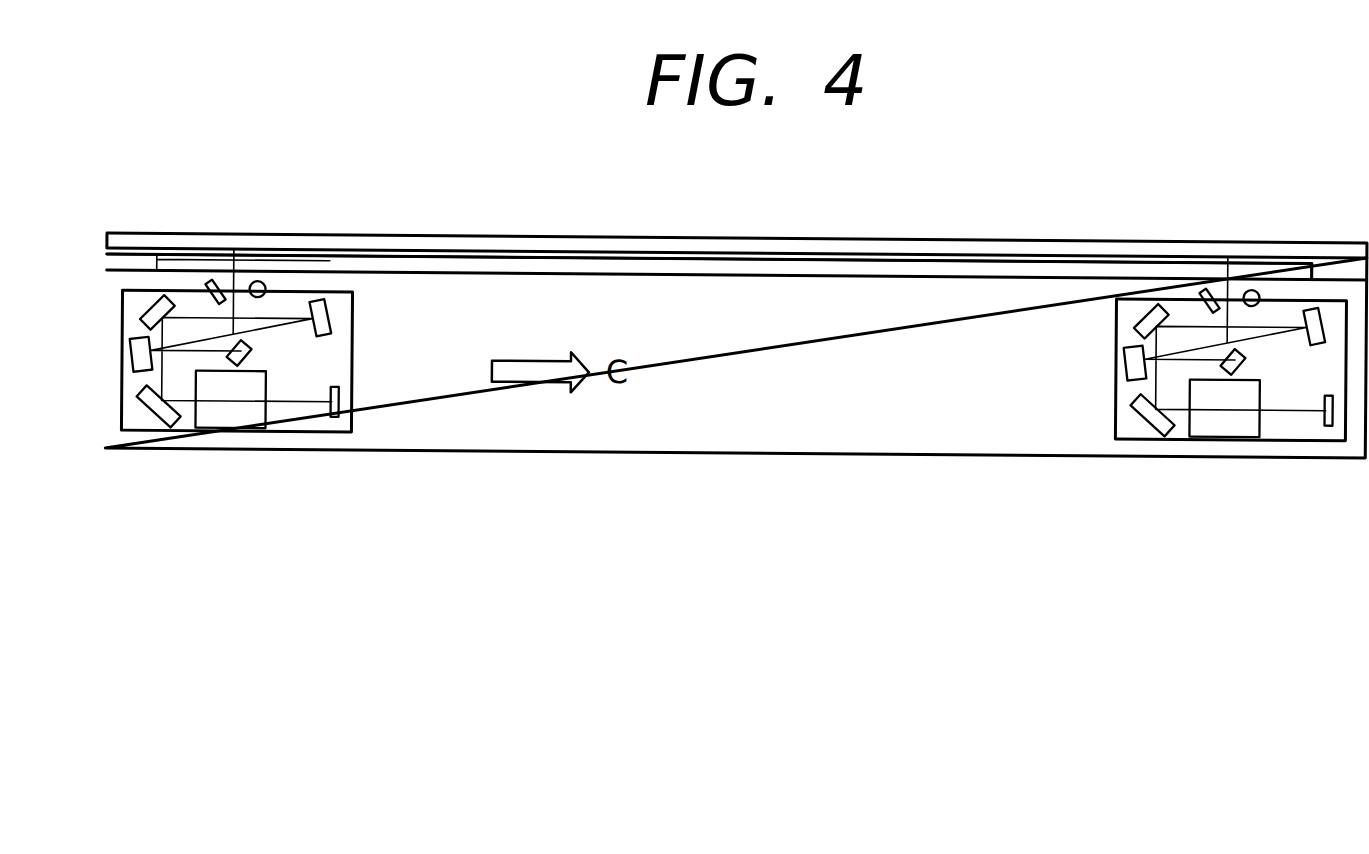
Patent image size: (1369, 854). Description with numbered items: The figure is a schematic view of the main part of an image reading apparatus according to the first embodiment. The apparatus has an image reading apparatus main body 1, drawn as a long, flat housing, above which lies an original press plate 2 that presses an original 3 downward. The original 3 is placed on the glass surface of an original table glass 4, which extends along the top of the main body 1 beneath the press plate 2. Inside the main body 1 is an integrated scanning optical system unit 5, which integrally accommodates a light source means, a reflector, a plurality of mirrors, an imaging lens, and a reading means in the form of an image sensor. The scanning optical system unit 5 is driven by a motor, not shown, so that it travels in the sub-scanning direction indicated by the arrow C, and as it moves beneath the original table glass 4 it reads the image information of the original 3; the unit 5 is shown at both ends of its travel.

The image reading apparatus main body 1 is at (778, 438).
The original press plate 2 is at (348, 238).
The original 3 is at (1010, 253).
The original table glass 4 is at (713, 267).
The integrated scanning optical system unit 5 is at (353, 351).